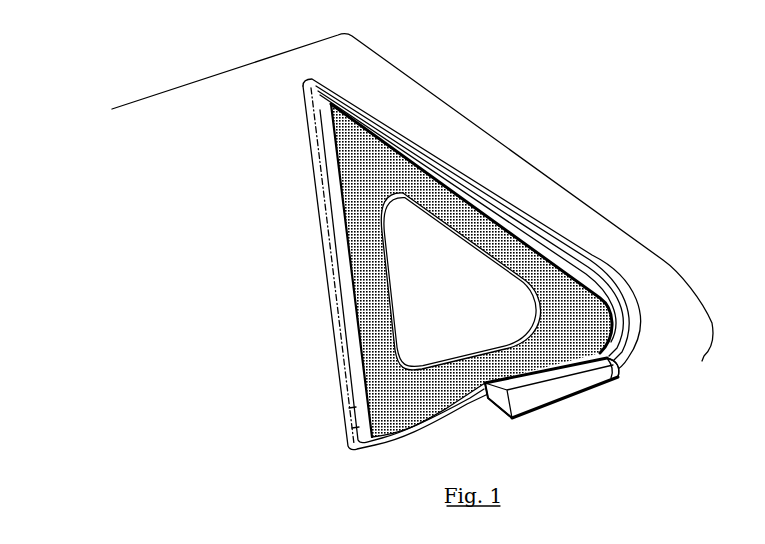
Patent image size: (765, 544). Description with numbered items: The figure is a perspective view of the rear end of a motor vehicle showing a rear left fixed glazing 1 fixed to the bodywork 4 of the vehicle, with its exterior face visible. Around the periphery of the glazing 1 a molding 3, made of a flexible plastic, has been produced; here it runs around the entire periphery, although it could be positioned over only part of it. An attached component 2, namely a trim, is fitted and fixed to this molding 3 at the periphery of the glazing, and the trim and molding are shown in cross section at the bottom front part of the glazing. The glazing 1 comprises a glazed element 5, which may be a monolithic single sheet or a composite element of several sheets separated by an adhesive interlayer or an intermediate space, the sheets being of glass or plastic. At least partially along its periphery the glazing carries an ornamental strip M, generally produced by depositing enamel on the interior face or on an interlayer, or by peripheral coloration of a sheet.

The glazing 1 is at (243, 98).
The attached component 2 is at (553, 392).
The molding 3 is at (459, 253).
The bodywork 4 is at (537, 167).
The glazed element 5 is at (408, 287).
The ornamental strip M is at (352, 150).